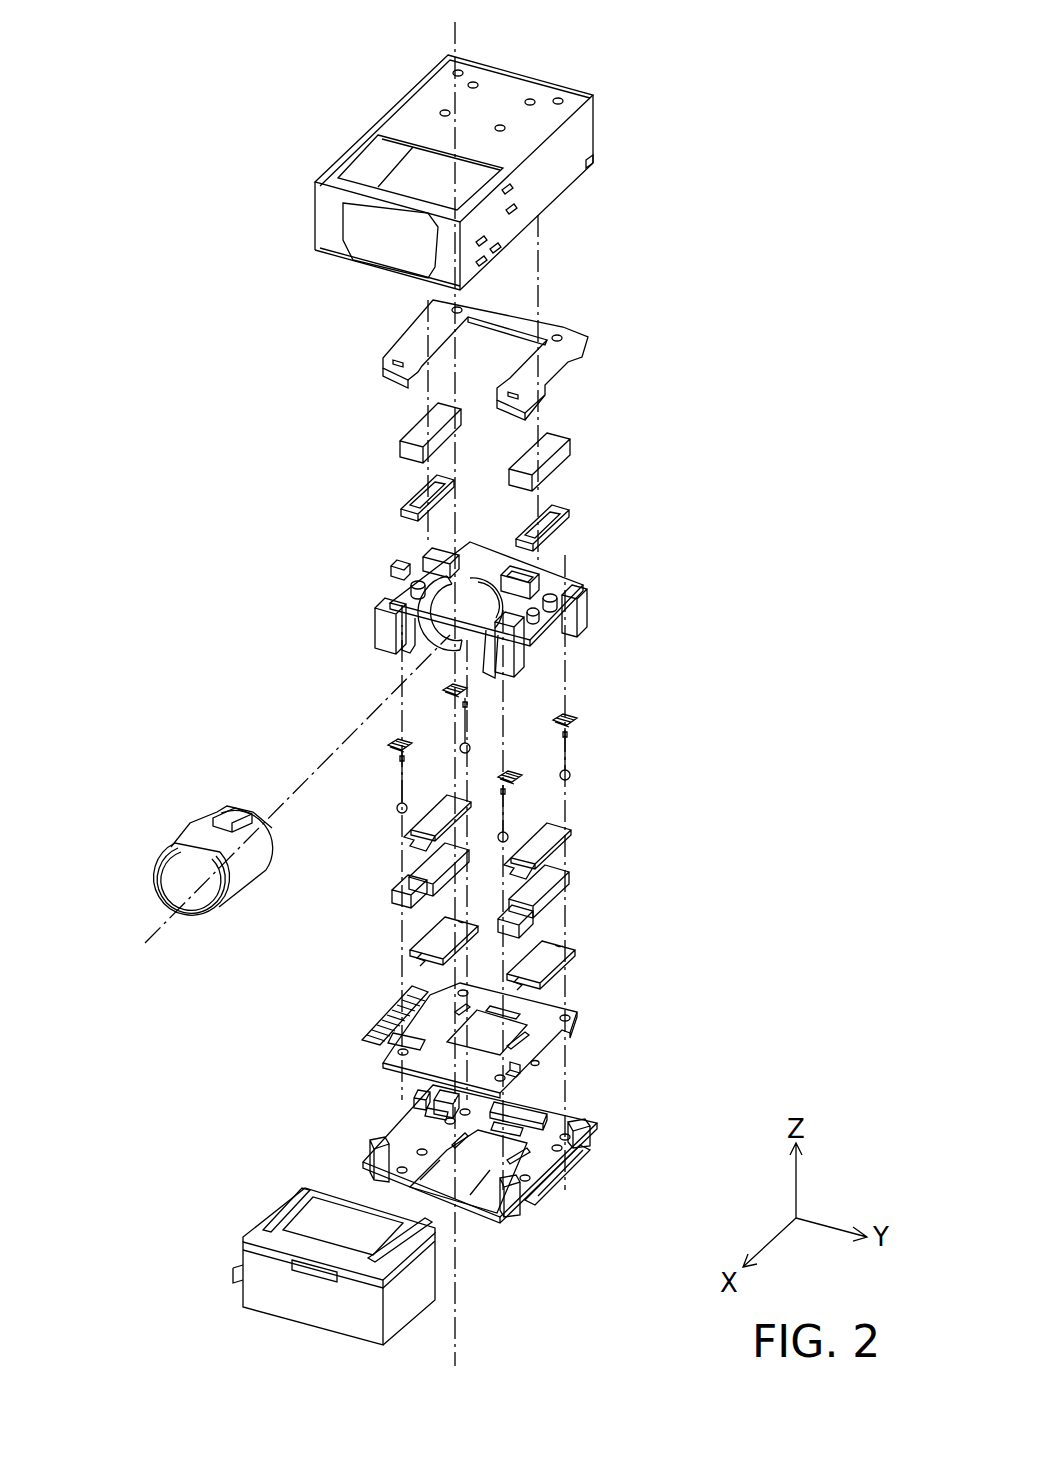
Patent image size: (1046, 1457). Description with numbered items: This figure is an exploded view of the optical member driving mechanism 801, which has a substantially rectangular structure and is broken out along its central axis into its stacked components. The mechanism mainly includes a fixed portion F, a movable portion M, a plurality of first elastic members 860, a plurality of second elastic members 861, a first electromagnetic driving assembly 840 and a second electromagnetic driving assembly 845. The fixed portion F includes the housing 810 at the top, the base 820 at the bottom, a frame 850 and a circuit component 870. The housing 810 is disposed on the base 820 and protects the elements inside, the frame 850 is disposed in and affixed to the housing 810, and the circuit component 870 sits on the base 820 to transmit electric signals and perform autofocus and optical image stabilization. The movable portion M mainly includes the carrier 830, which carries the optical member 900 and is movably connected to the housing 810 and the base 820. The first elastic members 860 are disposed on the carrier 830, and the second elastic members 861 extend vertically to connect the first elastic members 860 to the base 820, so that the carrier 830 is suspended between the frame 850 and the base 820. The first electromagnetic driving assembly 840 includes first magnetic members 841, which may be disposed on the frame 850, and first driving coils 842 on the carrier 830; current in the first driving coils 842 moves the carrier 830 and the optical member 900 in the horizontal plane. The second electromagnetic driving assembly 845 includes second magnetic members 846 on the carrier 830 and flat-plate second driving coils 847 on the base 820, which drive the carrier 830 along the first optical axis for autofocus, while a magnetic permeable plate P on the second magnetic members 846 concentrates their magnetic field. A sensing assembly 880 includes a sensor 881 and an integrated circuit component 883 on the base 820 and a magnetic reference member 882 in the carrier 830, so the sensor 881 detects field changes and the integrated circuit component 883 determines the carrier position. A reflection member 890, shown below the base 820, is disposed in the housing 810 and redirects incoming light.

The optical member driving mechanism 801 is at (368, 683).
The housing 810 is at (583, 143).
The base 820 is at (580, 1135).
The carrier 830 is at (585, 592).
The first electromagnetic driving assembly 840 is at (368, 388).
The first magnetic members 841 is at (412, 422).
The first driving coils 842 is at (408, 493).
The second electromagnetic driving assembly 845 is at (368, 650).
The second magnetic members 846 is at (415, 866).
The second driving coils 847 is at (410, 955).
The frame 850 is at (590, 340).
The first elastic members 860 is at (450, 690).
The second elastic members 861 is at (460, 748).
The circuit component 870 is at (498, 1034).
The sensing assembly 880 is at (368, 746).
The sensor 881 is at (540, 1076).
The reference member 882 is at (393, 896).
The integrated circuit component 883 is at (385, 1022).
The reflection member 890 is at (262, 1262).
The optical member 900 is at (195, 872).
The magnetic permeable plate P is at (405, 837).
The movable portion M is at (165, 711).